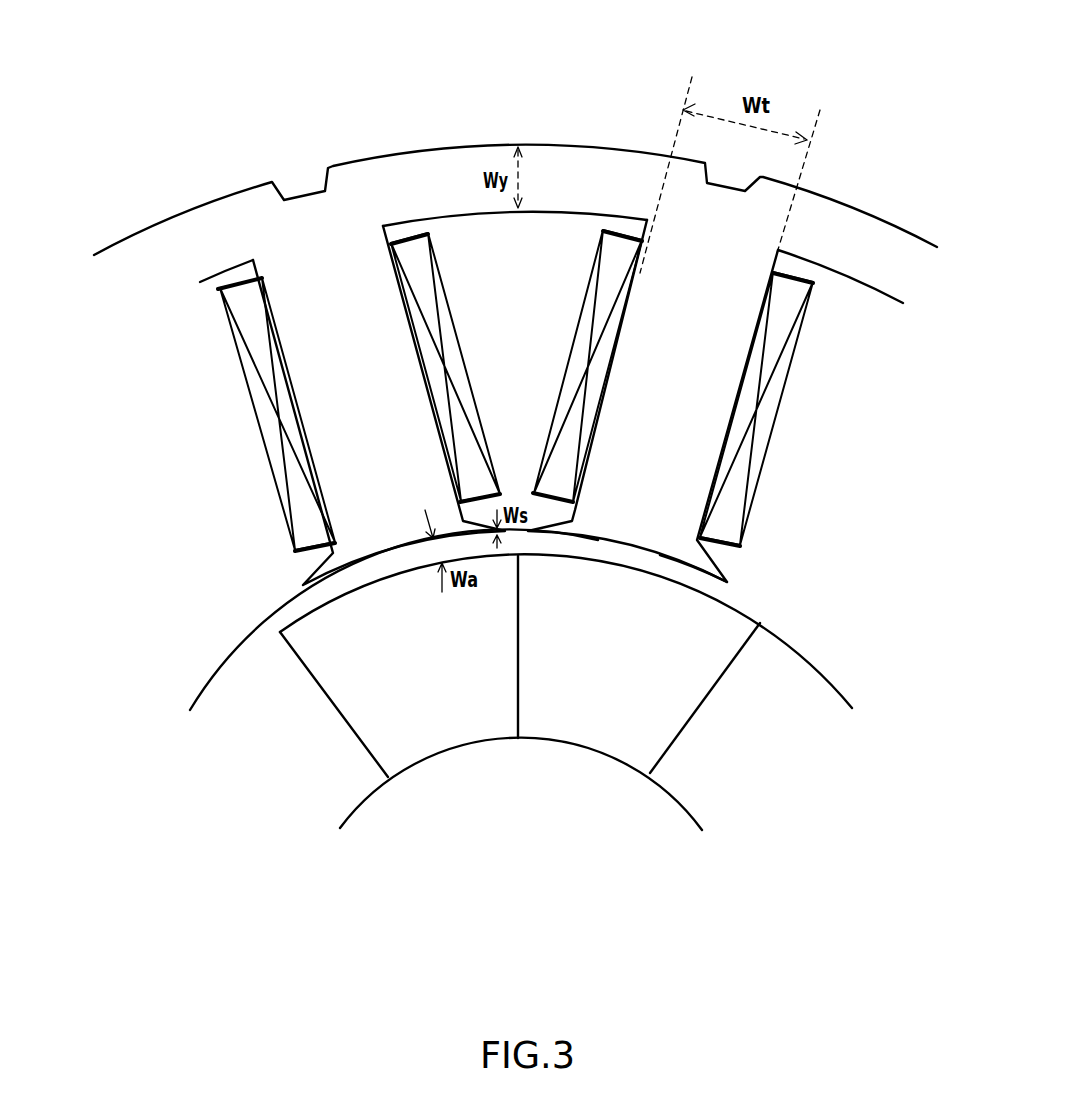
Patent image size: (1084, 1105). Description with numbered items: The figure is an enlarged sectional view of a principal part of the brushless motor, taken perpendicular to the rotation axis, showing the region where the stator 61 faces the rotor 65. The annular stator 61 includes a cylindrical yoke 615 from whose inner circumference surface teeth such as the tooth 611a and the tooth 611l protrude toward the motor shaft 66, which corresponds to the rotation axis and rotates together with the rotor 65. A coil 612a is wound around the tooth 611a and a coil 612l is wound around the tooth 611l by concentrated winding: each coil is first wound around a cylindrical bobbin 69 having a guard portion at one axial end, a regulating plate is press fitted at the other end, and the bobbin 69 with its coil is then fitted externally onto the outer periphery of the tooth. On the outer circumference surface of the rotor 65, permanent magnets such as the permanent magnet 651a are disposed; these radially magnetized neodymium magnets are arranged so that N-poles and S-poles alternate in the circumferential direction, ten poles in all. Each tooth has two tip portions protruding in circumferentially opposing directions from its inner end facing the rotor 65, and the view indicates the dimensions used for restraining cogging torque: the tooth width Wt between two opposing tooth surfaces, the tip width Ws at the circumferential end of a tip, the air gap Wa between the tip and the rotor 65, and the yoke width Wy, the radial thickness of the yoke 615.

The stator 61 is at (517, 292).
The yoke 615 is at (407, 173).
The tooth 611l is at (333, 357).
The tooth 611a is at (683, 437).
The coil 612l is at (267, 420).
The coil 612a is at (753, 422).
The rotor 65 is at (540, 653).
The bobbin 69 is at (733, 568).
The permanent magnet 651a is at (707, 628).
The motor shaft 66 is at (540, 838).